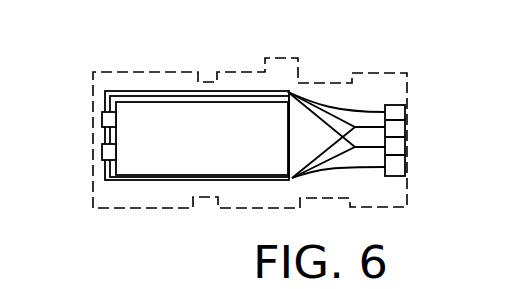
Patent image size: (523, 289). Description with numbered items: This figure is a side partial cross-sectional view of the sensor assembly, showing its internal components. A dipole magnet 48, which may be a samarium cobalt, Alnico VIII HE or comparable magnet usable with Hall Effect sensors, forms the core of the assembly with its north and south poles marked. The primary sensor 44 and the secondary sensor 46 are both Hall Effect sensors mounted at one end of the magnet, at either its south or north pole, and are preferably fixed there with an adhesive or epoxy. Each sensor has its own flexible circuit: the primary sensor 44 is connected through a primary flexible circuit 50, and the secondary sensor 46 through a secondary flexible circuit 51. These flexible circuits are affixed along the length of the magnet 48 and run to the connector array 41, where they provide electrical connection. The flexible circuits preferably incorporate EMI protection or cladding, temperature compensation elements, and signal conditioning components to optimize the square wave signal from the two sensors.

The connector array 41 is at (398, 123).
The primary sensor 44 is at (102, 117).
The secondary sensor 46 is at (102, 152).
The magnet 48 is at (192, 112).
The primary flexible circuit 50 is at (149, 94).
The secondary flexible circuit 51 is at (141, 177).